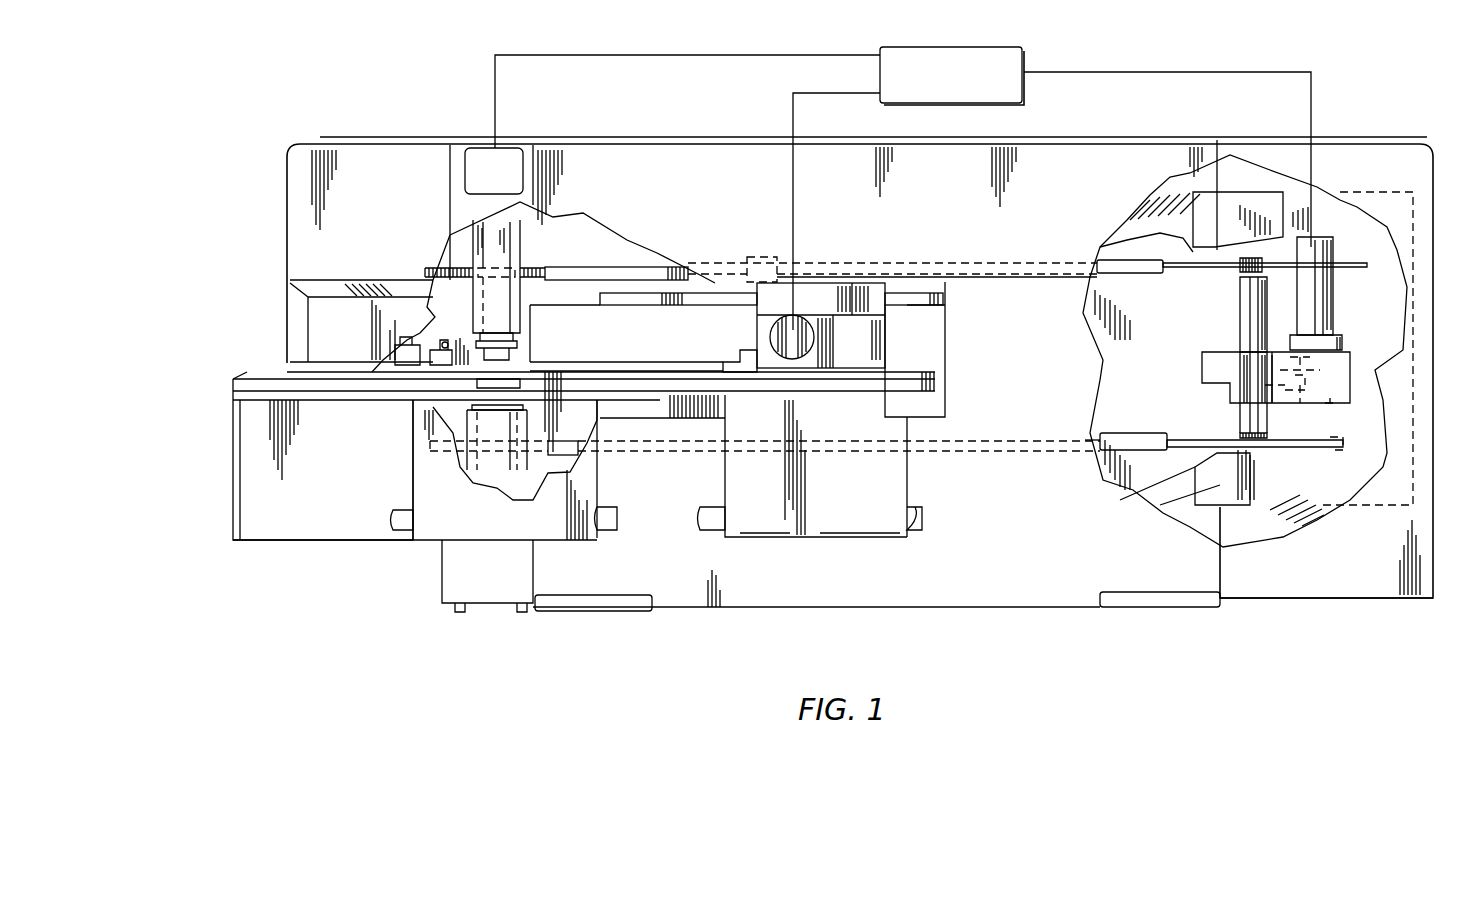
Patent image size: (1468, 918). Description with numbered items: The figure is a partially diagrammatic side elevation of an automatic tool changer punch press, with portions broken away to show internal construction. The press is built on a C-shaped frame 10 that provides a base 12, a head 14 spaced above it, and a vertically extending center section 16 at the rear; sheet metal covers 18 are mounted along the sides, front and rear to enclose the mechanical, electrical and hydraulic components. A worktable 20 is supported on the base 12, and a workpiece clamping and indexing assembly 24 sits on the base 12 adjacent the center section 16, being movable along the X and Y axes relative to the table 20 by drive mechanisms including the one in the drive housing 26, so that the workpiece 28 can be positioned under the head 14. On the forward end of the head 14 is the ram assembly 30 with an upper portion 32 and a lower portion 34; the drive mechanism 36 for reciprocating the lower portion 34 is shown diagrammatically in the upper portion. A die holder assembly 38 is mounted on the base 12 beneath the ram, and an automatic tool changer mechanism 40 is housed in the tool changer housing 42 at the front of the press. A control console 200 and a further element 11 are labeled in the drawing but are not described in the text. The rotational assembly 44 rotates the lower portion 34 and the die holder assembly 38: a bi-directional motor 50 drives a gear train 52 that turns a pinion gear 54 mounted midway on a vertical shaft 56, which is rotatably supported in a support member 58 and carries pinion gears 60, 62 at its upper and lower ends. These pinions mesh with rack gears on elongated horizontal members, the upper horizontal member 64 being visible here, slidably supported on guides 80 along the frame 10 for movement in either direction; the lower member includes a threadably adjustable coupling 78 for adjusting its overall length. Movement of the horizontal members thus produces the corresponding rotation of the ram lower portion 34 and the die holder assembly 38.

The frame 10 is at (678, 618).
The base portion 11 is at (510, 500).
The base 12 is at (1004, 511).
The head 14 is at (565, 260).
The center section 16 is at (1010, 355).
The sheet metal covers 18 is at (651, 213).
The worktable 20 is at (265, 417).
The workpiece clamping and indexing assembly 24 is at (727, 347).
The drive housing 26 is at (820, 345).
The workpiece 28 is at (330, 372).
The ram assembly 30 is at (473, 247).
The upper portion 32 is at (470, 263).
The lower portion 34 is at (505, 332).
The drive mechanism 36 is at (498, 160).
The die holder assembly 38 is at (490, 457).
The automatic tool changer mechanism 40 is at (400, 353).
The tool changer housing 42 is at (332, 314).
The rotational assembly 44 is at (1330, 383).
The bi-directional motor 50 is at (1313, 318).
The gear train 52 is at (1322, 397).
The pinion gear 54 is at (1217, 387).
The vertical shaft 56 is at (1240, 430).
The support member 58 is at (1238, 322).
The pinion gear 60 is at (1247, 260).
The pinion gear 62 is at (1263, 452).
The upper horizontal member 64 is at (625, 258).
The threadably adjustable coupling 78 is at (1137, 440).
The guides 80 is at (767, 257).
The control console 200 is at (979, 47).